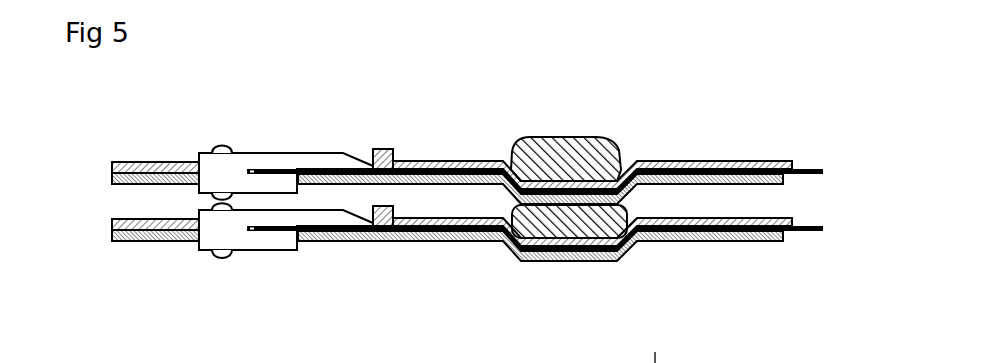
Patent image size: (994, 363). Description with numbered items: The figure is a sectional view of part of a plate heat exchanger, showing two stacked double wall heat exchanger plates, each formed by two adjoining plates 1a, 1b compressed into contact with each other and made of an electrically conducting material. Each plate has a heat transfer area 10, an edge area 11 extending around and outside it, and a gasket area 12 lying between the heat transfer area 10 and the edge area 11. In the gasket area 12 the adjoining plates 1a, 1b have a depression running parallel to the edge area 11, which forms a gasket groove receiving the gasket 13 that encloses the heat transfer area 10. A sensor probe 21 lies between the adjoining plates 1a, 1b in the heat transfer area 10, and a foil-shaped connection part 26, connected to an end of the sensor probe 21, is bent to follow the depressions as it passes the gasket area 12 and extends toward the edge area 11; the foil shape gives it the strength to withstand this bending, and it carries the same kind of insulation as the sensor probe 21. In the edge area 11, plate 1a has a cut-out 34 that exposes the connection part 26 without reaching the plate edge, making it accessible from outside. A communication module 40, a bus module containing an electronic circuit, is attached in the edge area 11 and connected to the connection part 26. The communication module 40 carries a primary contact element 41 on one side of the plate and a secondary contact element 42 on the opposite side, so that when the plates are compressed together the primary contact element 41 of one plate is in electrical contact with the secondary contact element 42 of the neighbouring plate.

The adjoining plate 1a is at (122, 160).
The adjoining plate 1b is at (130, 241).
The heat transfer area 10 is at (727, 162).
The edge area 11 is at (446, 162).
The gasket area 12 is at (598, 252).
The gasket 13 is at (568, 138).
The sensor probe 21 is at (805, 172).
The connection part 26 is at (642, 168).
The cut-out 34 is at (343, 153).
The communication module 40 is at (255, 162).
The primary contact element 41 is at (213, 148).
The secondary contact element 42 is at (210, 200).